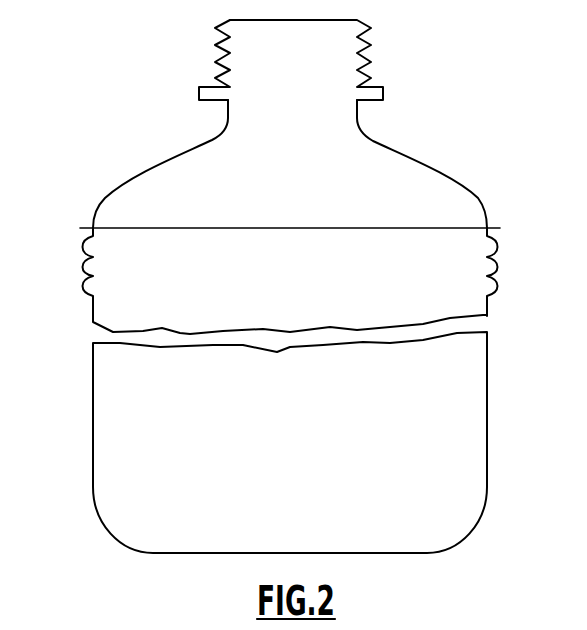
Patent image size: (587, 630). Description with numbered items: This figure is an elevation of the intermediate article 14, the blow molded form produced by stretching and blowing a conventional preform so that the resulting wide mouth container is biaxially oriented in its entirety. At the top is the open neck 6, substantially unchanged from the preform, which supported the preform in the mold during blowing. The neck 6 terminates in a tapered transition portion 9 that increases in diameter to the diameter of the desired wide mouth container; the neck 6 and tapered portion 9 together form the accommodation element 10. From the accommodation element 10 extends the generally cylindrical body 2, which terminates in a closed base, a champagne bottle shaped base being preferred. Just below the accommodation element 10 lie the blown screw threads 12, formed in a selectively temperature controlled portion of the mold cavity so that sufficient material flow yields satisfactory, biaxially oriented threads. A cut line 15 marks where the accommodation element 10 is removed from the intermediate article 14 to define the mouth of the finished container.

The generally cylindrical body 2 is at (487, 401).
The neck 6 is at (366, 52).
The tapered transition portion 9 is at (176, 158).
The accommodation element 10 is at (420, 163).
The screw thread 12 is at (496, 283).
The intermediate article 14 is at (76, 312).
The cut line 15 is at (493, 228).